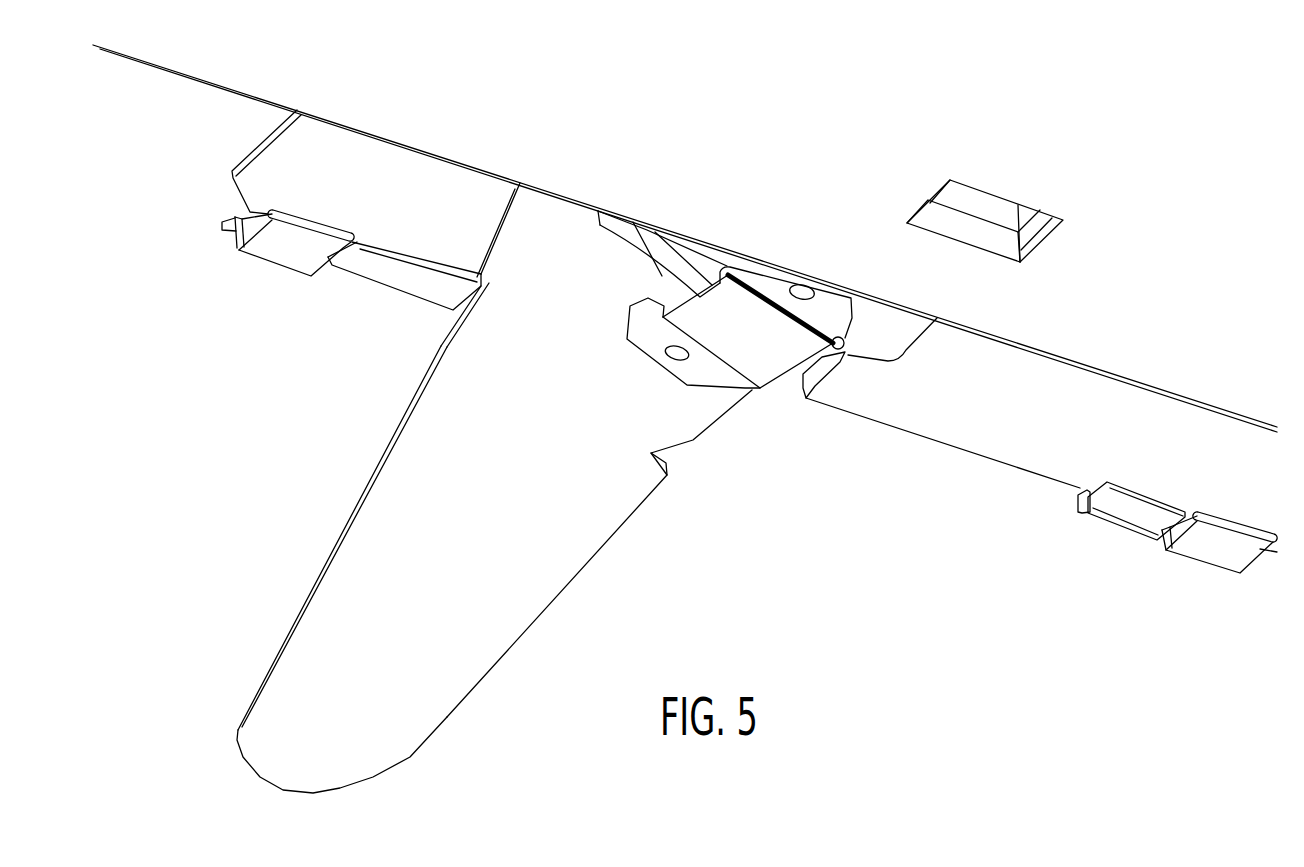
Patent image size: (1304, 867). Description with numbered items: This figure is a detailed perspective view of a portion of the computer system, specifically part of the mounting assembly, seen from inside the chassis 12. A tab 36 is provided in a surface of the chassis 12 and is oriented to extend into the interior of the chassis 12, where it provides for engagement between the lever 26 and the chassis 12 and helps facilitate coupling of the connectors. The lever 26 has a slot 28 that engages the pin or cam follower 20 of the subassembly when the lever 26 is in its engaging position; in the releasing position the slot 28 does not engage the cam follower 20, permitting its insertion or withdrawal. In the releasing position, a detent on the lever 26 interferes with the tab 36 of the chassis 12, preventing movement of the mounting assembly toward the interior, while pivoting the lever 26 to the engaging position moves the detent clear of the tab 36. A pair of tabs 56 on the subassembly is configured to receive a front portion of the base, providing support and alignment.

The chassis 12 is at (775, 166).
The cam follower 20 is at (839, 352).
The lever 26 is at (453, 582).
The slot 28 is at (623, 250).
The tab 36 is at (975, 208).
The tabs 56 is at (298, 257).